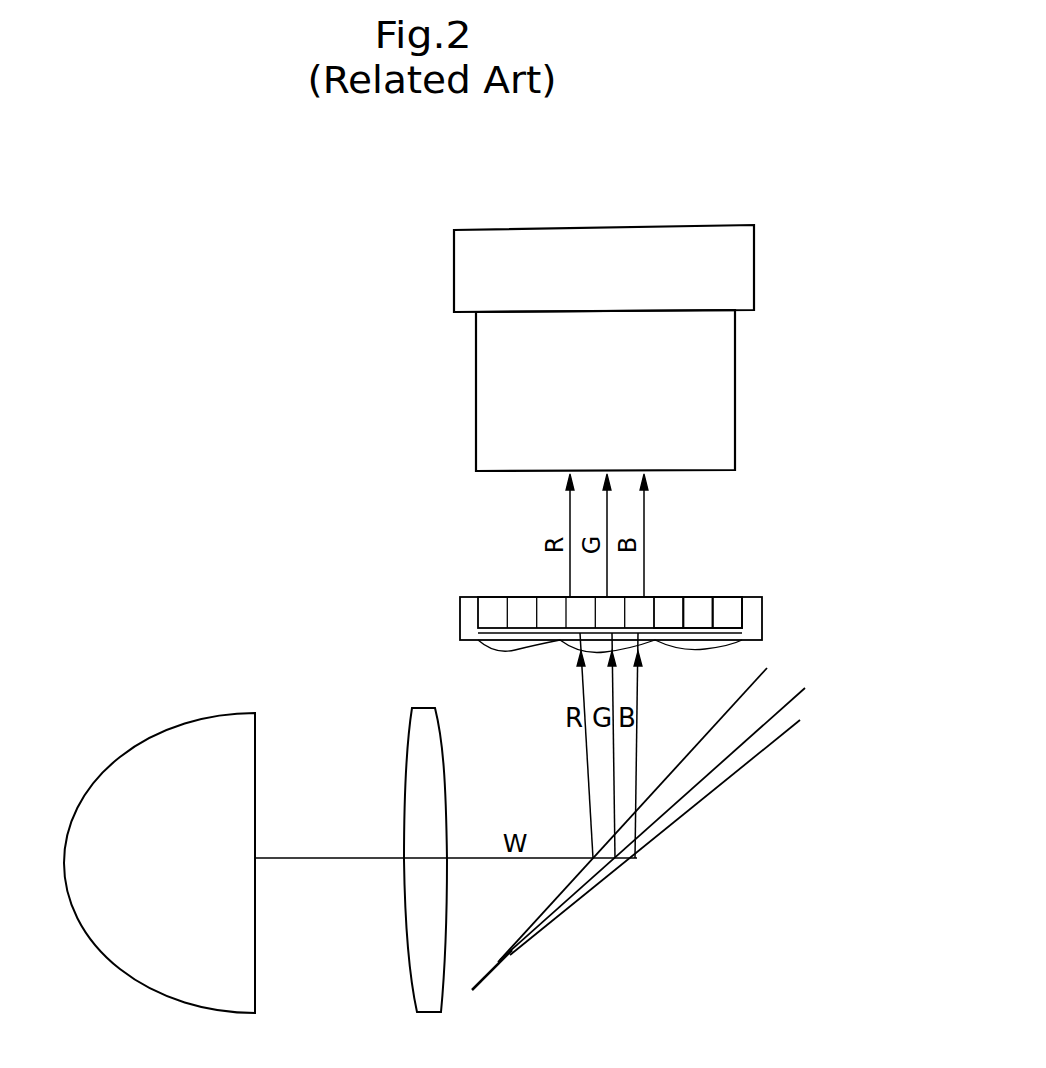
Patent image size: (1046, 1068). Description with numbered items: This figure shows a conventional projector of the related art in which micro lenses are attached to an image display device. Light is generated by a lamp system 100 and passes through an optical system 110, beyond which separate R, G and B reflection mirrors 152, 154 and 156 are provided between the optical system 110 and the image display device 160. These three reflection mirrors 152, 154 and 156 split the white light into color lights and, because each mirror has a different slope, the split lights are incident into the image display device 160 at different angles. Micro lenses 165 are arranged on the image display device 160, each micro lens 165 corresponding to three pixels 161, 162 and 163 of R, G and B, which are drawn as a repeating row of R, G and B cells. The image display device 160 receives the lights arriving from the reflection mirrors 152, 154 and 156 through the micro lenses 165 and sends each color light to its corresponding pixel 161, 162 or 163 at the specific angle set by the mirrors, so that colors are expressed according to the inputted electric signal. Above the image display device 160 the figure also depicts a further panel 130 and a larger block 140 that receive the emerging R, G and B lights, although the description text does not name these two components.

The lamp system 100 is at (227, 711).
The optical system 110 is at (422, 708).
The liquid crystal panel 130 is at (735, 389).
The projection lens 140 is at (754, 263).
The R reflection mirror 152 is at (767, 668).
The G reflection mirror 154 is at (805, 688).
The B reflection mirror 156 is at (800, 720).
The image display device 160 is at (651, 564).
The R pixel 161 is at (663, 597).
The G pixel 162 is at (697, 597).
The B pixel 163 is at (728, 597).
The micro lens 165 is at (693, 643).